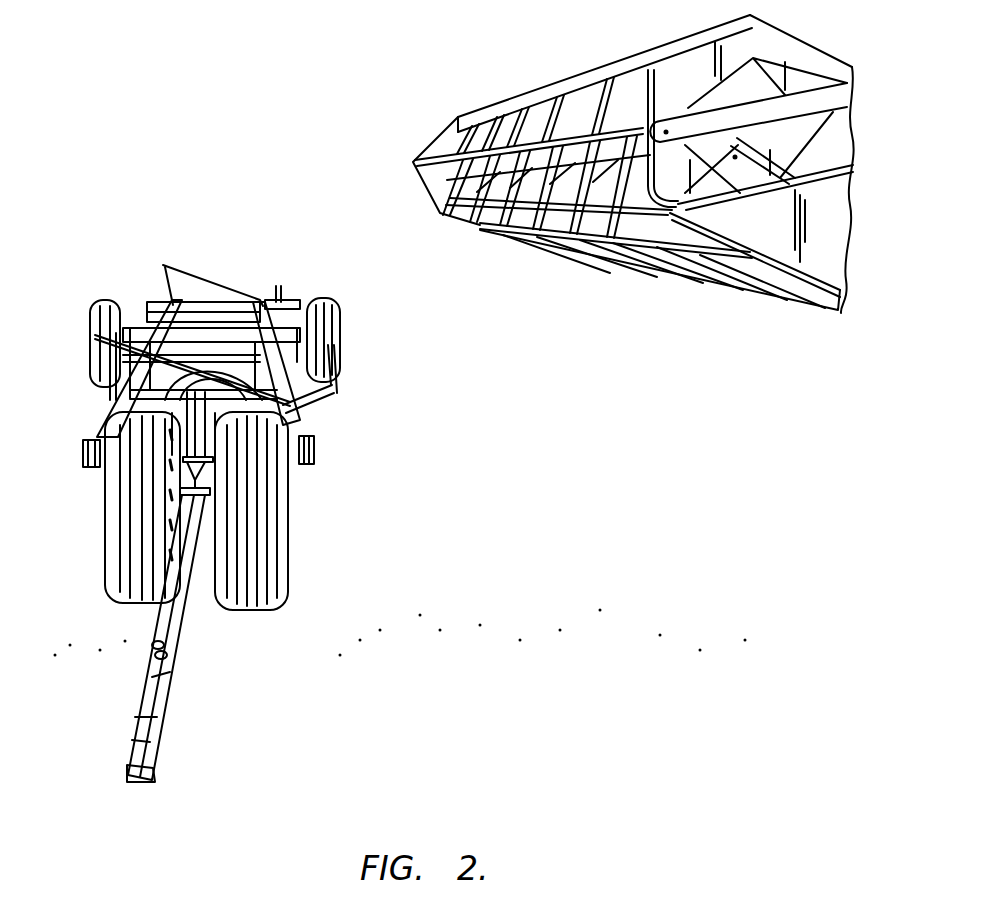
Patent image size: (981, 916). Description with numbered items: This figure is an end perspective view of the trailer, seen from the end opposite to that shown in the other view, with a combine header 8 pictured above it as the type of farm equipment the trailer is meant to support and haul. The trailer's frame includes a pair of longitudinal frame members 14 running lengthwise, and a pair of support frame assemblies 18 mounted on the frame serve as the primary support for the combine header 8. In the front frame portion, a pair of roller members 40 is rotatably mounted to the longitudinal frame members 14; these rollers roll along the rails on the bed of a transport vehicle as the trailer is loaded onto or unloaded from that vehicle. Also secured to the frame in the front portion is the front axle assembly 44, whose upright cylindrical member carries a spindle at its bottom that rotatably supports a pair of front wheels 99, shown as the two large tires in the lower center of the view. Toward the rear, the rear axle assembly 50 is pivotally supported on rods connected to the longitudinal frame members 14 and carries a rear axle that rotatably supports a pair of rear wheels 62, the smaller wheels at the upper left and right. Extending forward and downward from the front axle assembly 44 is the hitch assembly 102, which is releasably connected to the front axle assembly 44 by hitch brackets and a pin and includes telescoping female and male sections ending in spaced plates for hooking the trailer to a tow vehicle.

The combine header 8 is at (478, 106).
The longitudinal frame members 14 is at (130, 370).
The support frame assemblies 18 is at (238, 278).
The roller members 40 is at (85, 462).
The front axle assembly 44 is at (86, 578).
The rear axle assembly 50 is at (302, 296).
The rear wheels 62 is at (110, 298).
The front wheels 99 is at (110, 488).
The hitch assembly 102 is at (132, 678).